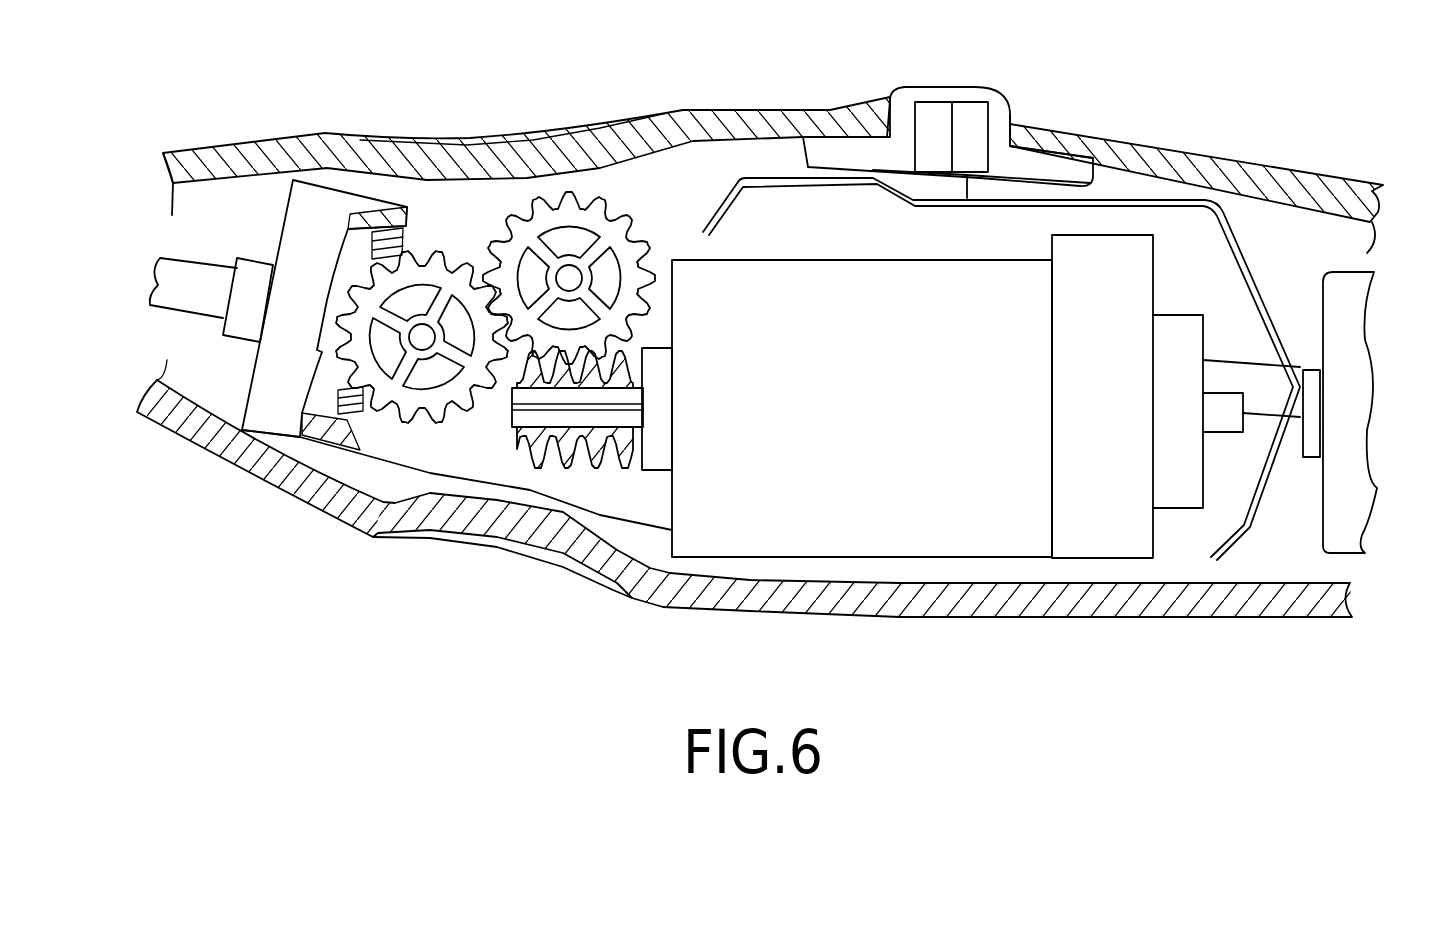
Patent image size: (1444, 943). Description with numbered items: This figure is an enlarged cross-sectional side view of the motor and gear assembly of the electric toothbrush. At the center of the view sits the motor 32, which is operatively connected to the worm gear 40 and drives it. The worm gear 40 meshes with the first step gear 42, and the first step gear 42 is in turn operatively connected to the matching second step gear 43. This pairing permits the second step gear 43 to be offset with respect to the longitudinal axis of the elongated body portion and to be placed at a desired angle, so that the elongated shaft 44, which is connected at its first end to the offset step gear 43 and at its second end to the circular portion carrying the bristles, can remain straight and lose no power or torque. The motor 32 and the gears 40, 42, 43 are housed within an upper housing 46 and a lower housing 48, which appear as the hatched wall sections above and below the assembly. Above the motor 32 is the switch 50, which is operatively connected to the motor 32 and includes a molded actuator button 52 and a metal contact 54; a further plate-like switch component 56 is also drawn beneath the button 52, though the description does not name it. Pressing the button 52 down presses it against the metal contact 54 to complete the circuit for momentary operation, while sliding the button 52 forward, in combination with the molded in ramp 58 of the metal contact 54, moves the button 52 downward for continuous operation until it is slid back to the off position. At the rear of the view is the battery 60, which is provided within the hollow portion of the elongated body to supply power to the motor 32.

The motor 32 is at (958, 532).
The worm gear 40 is at (568, 465).
The first step gear 42 is at (600, 202).
The second step gear 43 is at (442, 262).
The elongated shaft 44 is at (173, 298).
The upper housing 46 is at (817, 602).
The lower housing 48 is at (703, 113).
The switch 50 is at (1015, 100).
The molded actuator button 52 is at (937, 90).
The metal contact 54 is at (1137, 200).
The clamp plate 56 is at (832, 125).
The molded in ramp 58 is at (900, 195).
The battery 60 is at (1340, 317).